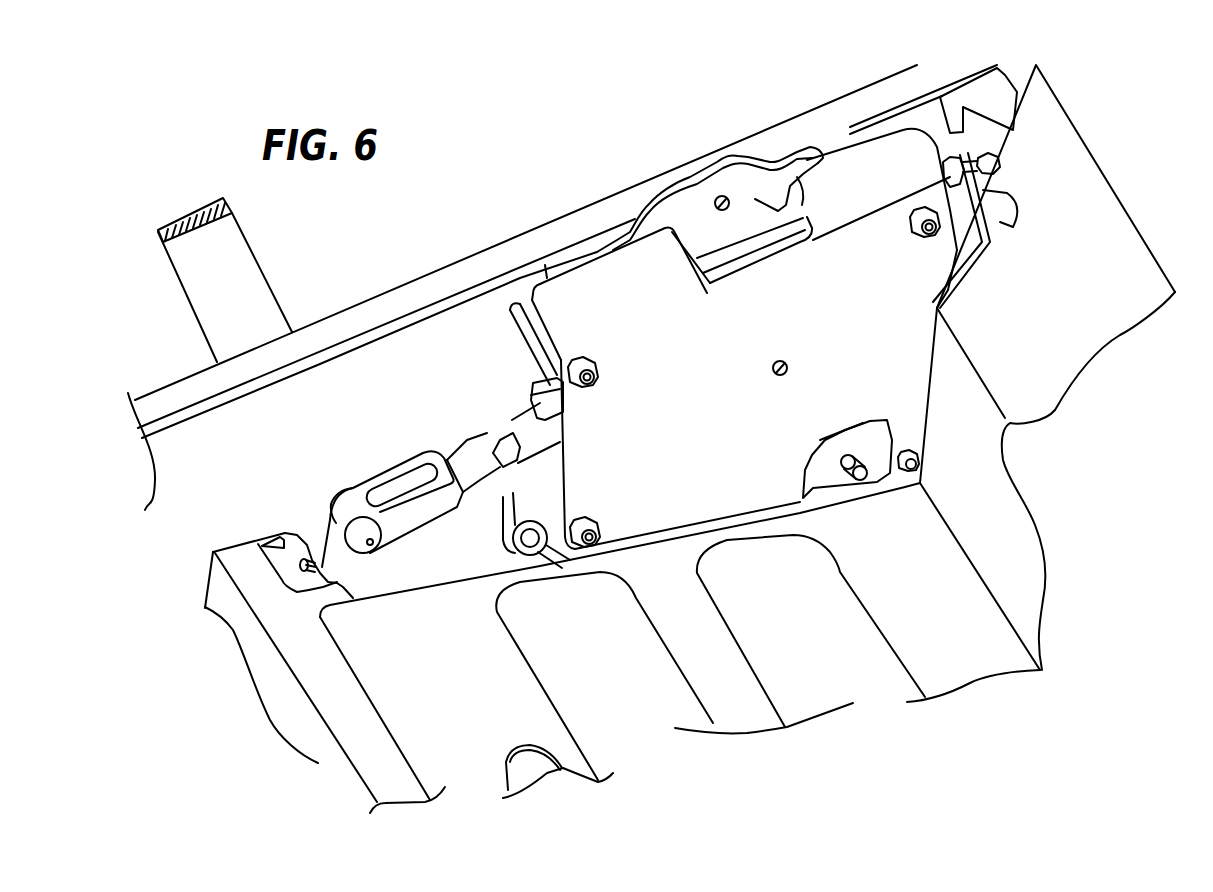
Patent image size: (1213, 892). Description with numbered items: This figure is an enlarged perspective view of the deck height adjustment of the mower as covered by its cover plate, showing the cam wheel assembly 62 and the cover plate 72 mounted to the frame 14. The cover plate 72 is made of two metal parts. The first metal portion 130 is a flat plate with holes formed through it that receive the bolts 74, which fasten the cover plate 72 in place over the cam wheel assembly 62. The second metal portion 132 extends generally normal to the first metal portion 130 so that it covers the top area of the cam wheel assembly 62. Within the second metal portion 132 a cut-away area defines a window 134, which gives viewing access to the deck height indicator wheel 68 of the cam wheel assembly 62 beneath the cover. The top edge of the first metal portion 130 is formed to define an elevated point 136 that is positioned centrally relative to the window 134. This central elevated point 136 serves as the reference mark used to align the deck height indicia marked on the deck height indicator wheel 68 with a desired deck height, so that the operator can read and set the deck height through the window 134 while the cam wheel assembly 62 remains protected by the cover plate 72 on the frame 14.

The frame 14 is at (525, 247).
The cam wheel assembly 62 is at (697, 173).
The elevated point 136 is at (733, 230).
The window 134 is at (753, 197).
The deck height indicator wheel 68 is at (793, 212).
The second metal portion 132 is at (875, 157).
The cover plate 72 is at (628, 299).
The first metal portion 130 is at (703, 426).
The bolts 74 is at (932, 240).